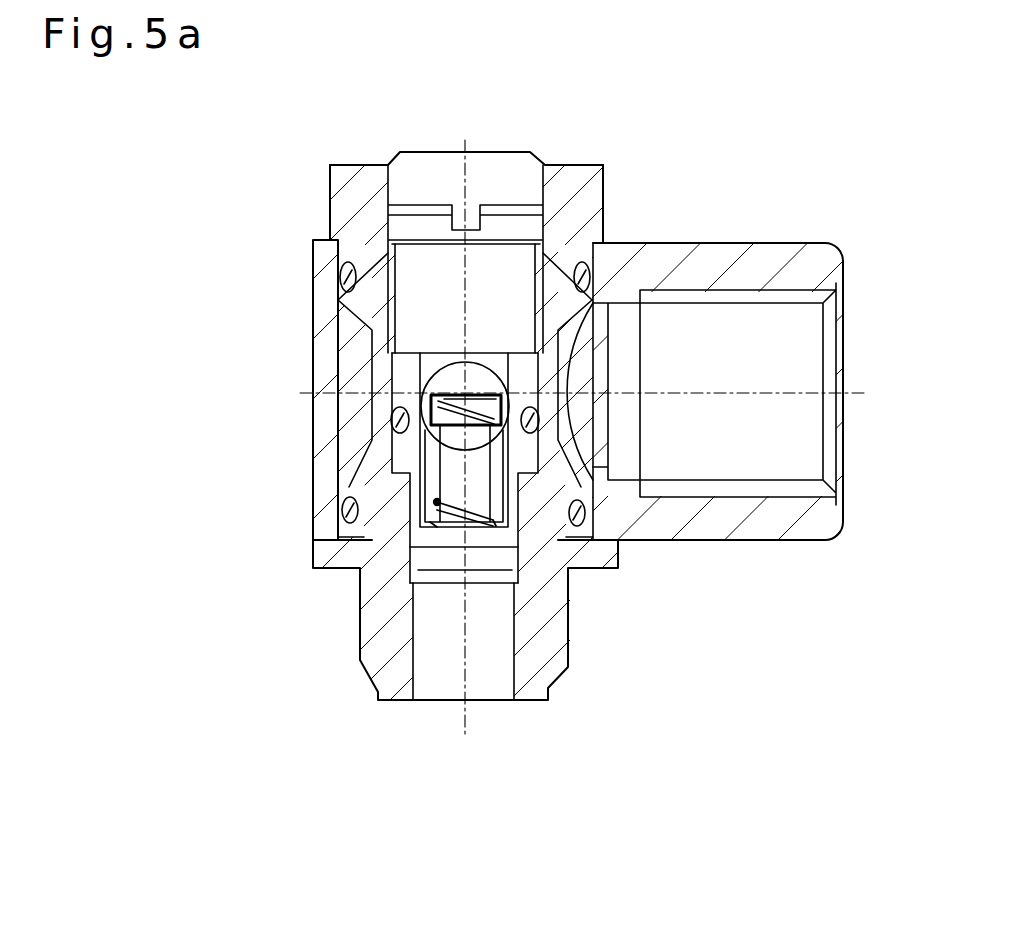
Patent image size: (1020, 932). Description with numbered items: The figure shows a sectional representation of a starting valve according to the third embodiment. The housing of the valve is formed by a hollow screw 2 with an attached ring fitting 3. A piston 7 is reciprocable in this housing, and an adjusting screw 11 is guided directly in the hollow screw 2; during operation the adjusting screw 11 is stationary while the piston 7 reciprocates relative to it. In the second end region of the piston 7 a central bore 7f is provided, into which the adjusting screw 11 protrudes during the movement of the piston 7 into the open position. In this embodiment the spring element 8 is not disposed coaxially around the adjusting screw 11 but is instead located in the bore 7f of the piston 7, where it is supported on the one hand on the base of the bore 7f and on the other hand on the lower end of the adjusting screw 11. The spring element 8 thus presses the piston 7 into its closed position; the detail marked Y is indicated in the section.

The hollow screw 2 is at (365, 230).
The adjusting screw 11 is at (425, 293).
The spring element 8 is at (430, 404).
The piston 7 is at (432, 446).
The central bore 7f is at (420, 509).
The ring fitting 3 is at (651, 518).
The ball Y is at (476, 363).